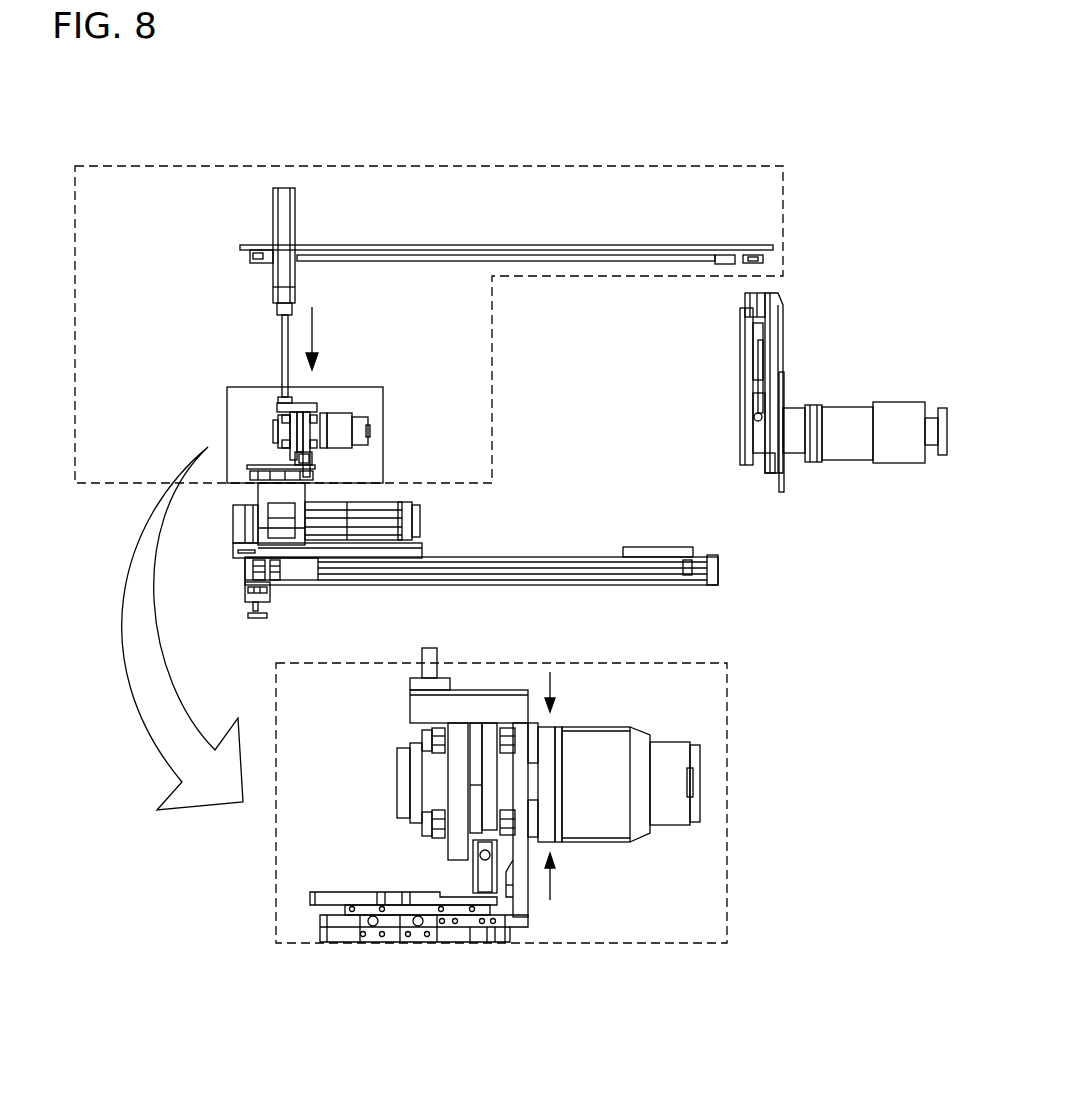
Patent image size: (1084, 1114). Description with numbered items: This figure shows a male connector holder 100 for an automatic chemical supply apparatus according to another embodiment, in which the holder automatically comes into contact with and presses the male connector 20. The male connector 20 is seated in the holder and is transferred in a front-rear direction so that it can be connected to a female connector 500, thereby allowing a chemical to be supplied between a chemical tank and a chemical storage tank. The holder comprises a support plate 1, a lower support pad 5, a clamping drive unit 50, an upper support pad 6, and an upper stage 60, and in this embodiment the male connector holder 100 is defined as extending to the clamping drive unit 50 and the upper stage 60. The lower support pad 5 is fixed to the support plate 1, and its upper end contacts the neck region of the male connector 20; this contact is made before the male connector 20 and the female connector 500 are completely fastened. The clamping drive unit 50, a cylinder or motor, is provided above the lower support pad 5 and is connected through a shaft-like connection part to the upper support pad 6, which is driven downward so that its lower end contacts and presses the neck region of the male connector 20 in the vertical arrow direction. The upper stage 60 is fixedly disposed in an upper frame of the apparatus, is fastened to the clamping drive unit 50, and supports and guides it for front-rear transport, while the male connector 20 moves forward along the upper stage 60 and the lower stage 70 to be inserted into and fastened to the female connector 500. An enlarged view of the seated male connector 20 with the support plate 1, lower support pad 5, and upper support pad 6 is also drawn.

The male connector holder 100 is at (785, 217).
The upper stage 60 is at (533, 245).
The clamping drive unit 50 is at (270, 283).
The upper support pad 6 is at (318, 403).
The lower stage 70 is at (573, 555).
The female connector 500 is at (857, 405).
The male connector 20 is at (702, 762).
The lower support pad 5 is at (528, 900).
The support plate 1 is at (320, 923).